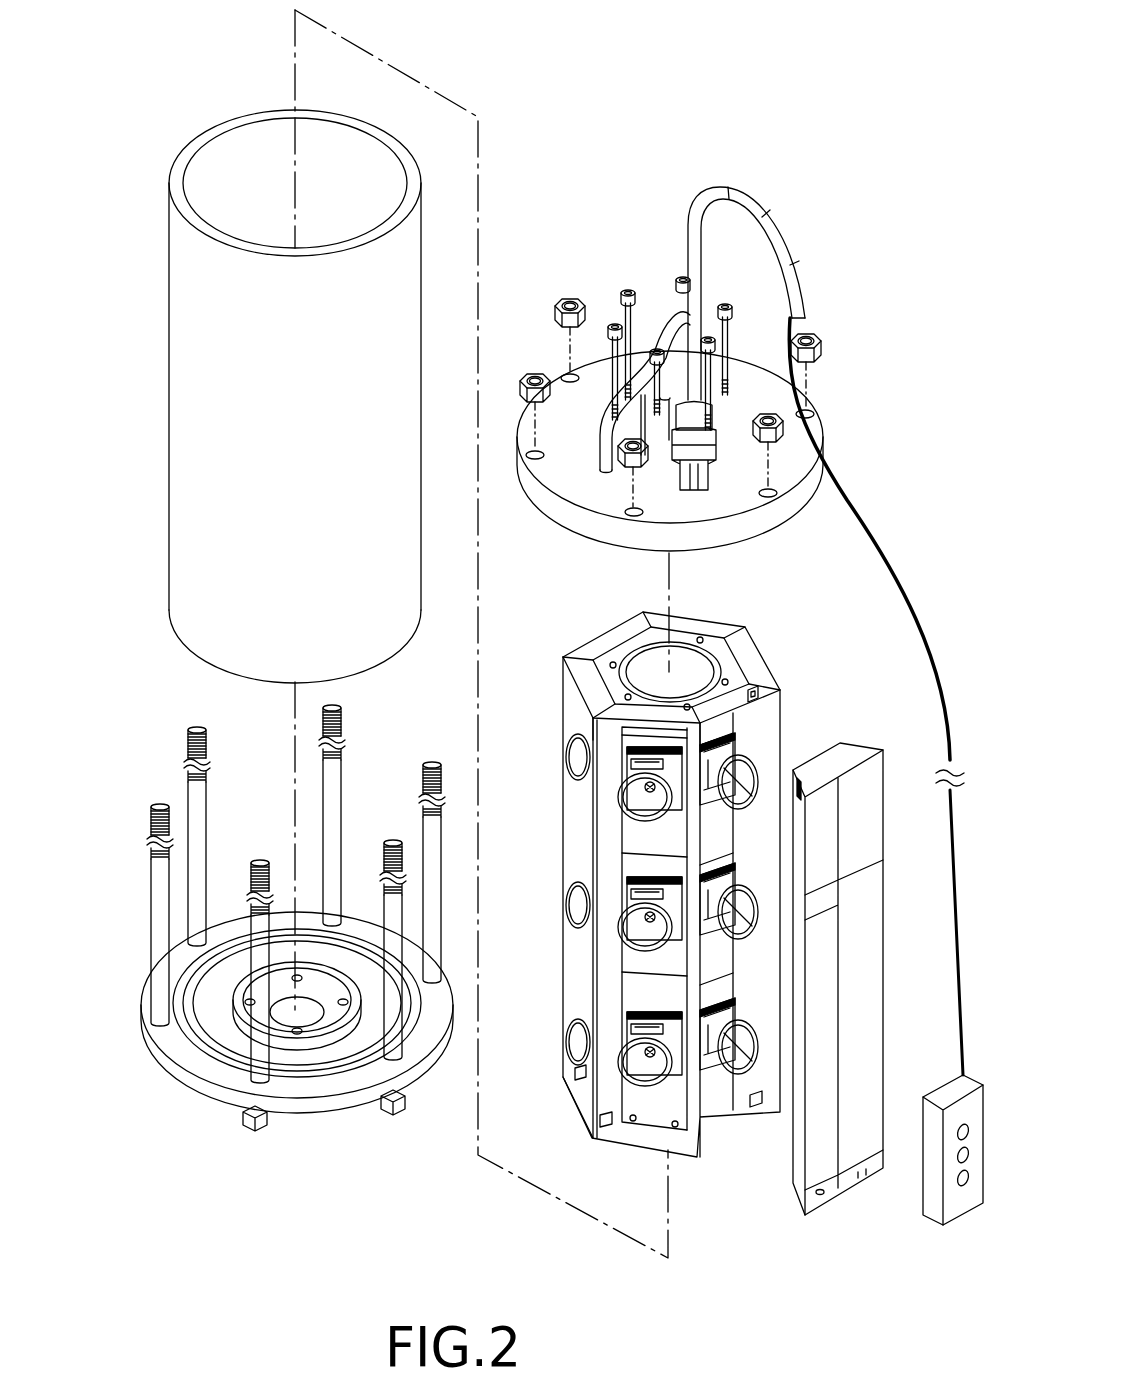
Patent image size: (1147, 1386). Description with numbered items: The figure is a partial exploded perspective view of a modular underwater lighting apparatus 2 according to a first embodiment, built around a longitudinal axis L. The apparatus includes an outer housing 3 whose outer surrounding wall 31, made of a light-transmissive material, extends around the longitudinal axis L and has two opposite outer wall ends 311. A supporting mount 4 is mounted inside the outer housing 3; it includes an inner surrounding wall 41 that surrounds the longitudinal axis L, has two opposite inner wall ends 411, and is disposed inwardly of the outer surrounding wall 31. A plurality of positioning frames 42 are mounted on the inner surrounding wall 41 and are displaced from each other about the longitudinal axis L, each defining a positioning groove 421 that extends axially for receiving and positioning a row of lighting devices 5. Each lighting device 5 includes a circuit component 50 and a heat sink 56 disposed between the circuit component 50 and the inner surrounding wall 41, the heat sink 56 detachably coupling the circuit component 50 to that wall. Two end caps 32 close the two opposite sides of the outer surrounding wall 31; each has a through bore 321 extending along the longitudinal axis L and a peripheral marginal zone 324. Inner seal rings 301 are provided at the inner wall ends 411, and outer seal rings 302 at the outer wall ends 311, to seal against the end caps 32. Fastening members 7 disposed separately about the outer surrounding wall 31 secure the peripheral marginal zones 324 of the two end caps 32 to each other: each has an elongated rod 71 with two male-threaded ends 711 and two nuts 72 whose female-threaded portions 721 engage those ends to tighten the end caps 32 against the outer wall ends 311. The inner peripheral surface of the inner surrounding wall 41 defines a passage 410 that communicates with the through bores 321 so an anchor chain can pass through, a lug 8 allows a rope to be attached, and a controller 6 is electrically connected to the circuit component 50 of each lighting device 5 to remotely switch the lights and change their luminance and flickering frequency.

The modular underwater lighting apparatus 2 is at (670, 283).
The outer housing 3 is at (277, 363).
The outer surrounding wall 31 is at (210, 495).
The outer wall ends 311 is at (242, 120).
The end caps 32 is at (504, 768).
The through bore 321 is at (323, 1027).
The peripheral marginal zone 324 is at (192, 1052).
The inner seal rings 301 is at (297, 1013).
The outer seal rings 302 is at (238, 1058).
The supporting mount 4 is at (677, 864).
The inner surrounding wall 41 is at (667, 653).
The passage 410 is at (686, 657).
The inner wall ends 411 is at (597, 653).
The positioning frames 42 is at (717, 979).
The positioning groove 421 is at (858, 958).
The lighting devices 5 is at (684, 928).
The circuit component 50 is at (754, 762).
The heat sink 56 is at (740, 737).
The controller 6 is at (965, 1205).
The fastening members 7 is at (273, 915).
The elongated rod 71 is at (398, 1000).
The male-threaded ends 711 is at (425, 786).
The nuts 72 is at (495, 709).
The female-threaded portion 721 is at (562, 296).
The lug 8 is at (668, 312).
The longitudinal axis L is at (292, 724).